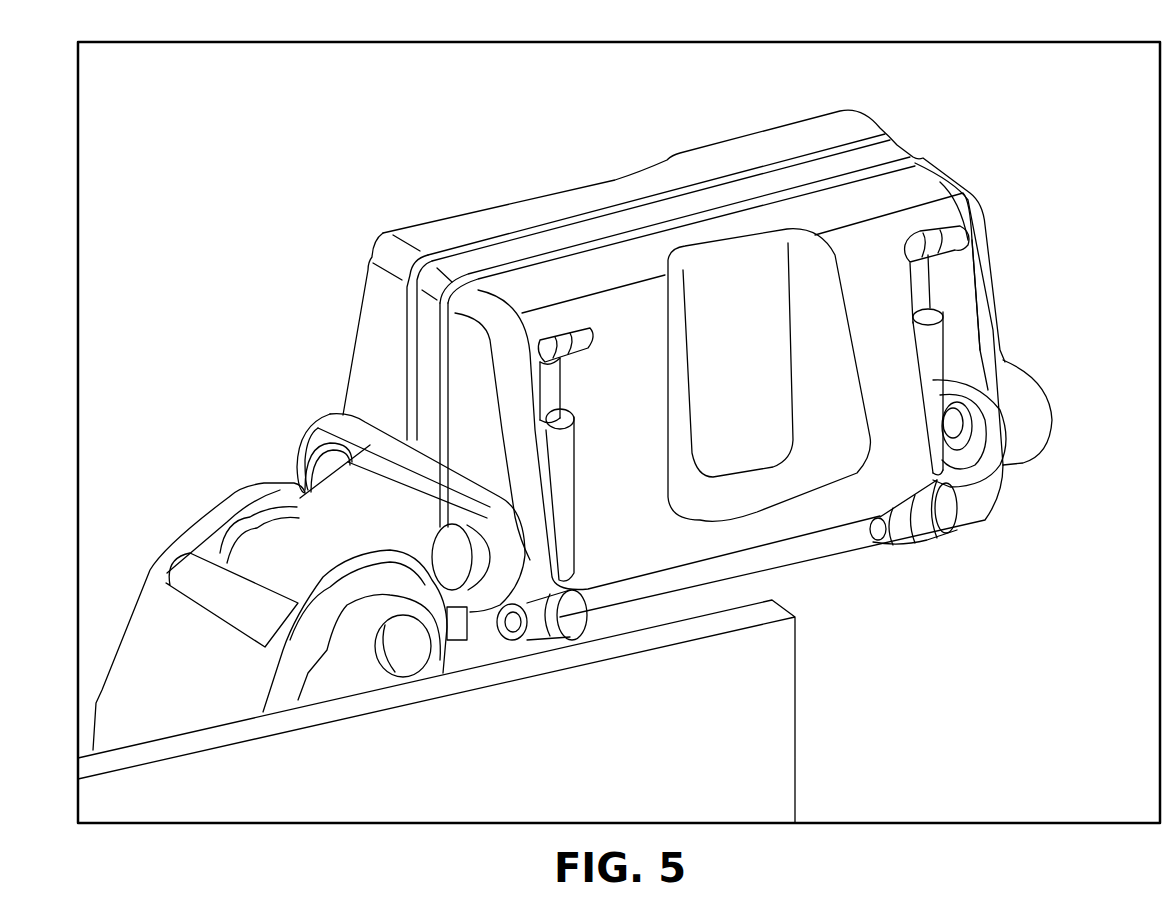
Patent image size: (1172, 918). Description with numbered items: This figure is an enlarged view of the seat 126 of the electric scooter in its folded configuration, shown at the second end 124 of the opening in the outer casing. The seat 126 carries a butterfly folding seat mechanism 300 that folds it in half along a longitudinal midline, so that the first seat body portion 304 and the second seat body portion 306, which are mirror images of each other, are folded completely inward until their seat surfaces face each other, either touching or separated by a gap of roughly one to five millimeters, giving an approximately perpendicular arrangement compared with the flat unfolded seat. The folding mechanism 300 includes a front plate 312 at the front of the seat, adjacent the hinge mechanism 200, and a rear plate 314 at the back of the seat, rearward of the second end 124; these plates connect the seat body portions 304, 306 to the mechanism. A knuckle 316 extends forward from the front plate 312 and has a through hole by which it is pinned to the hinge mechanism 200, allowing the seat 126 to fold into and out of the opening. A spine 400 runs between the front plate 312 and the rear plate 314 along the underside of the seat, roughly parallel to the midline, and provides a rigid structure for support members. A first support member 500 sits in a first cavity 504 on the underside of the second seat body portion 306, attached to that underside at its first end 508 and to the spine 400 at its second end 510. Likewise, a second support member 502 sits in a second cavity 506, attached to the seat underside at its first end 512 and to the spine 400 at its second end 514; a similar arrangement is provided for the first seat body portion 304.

The second end of opening 124 is at (797, 677).
The seat 126 is at (982, 155).
The hinge mechanism 200 is at (185, 697).
The butterfly folding seat mechanism 300 is at (892, 578).
The first seat body portion 304 is at (470, 222).
The second seat body portion 306 is at (600, 265).
The front plate 312 is at (380, 427).
The rear plate 314 is at (1033, 383).
The knuckle 316 is at (287, 540).
The spine 400 is at (753, 560).
The first support member 500 is at (563, 518).
The second support member 502 is at (1000, 407).
The first cavity 504 is at (660, 420).
The second cavity 506 is at (960, 333).
The first end of first support member 508 is at (563, 330).
The second end of first support member 510 is at (580, 620).
The first end of second support member 512 is at (935, 242).
The second end of second support member 514 is at (950, 522).